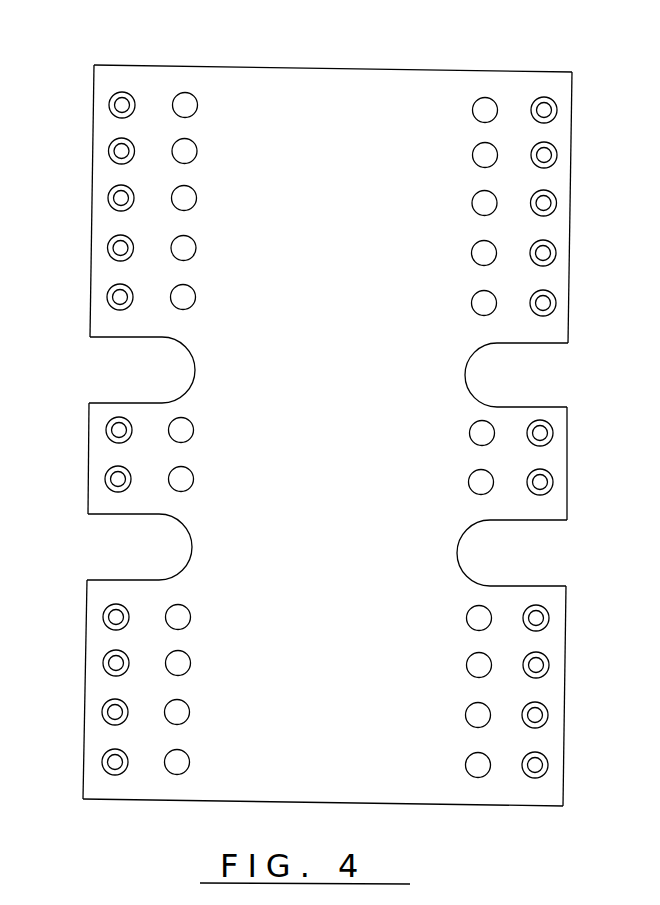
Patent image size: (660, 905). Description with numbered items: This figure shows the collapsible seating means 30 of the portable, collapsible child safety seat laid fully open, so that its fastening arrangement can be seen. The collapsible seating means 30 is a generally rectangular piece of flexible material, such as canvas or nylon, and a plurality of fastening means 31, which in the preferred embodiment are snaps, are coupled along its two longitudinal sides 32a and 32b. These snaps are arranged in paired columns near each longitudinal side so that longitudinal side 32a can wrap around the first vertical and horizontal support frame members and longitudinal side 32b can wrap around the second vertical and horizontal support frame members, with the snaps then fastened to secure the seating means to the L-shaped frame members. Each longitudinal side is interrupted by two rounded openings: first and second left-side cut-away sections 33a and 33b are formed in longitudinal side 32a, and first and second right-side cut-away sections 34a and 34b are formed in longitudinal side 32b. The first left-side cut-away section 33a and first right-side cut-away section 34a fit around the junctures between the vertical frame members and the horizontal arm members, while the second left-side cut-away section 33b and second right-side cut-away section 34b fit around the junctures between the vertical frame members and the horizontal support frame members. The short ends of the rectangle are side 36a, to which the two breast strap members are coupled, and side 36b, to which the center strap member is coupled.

The collapsible seating means 30 is at (380, 113).
The fastening means 31 is at (496, 147).
The longitudinal side 32a is at (90, 226).
The longitudinal side 32b is at (547, 430).
The first left-side cut-away section 33a is at (136, 371).
The second left-side cut-away section 33b is at (131, 553).
The first right-side cut-away section 34a is at (512, 372).
The second right-side cut-away section 34b is at (512, 553).
The side 36a is at (208, 68).
The side 36b is at (170, 800).